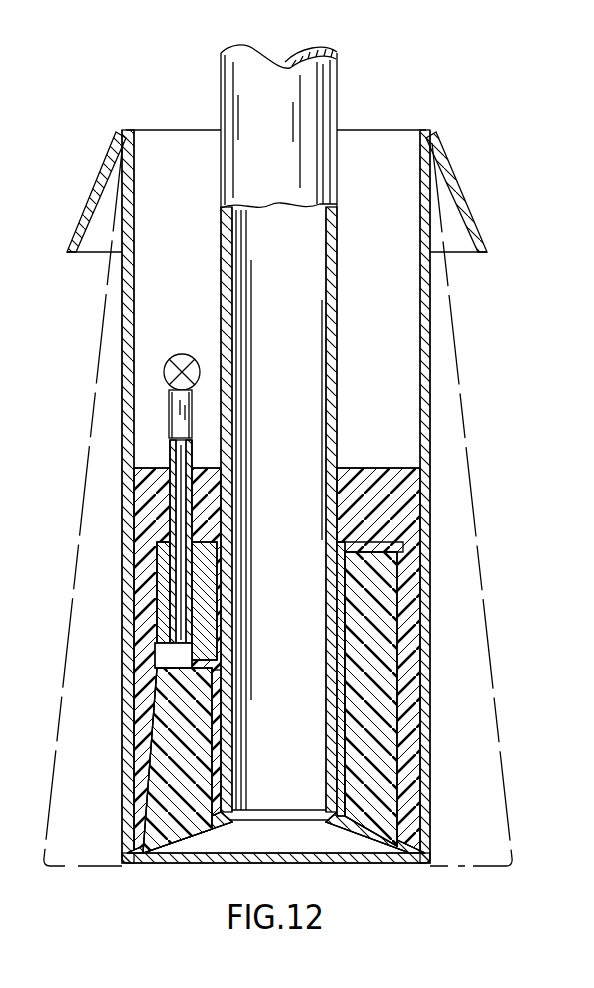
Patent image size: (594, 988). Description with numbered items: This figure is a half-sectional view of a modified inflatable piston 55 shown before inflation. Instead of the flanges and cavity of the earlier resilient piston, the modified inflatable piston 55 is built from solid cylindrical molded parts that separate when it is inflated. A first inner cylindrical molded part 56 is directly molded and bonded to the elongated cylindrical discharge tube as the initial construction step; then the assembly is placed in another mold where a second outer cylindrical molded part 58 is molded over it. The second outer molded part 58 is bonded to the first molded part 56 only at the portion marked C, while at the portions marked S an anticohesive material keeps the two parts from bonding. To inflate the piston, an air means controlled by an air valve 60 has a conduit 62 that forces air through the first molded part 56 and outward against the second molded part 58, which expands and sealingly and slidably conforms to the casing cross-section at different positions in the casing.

The modified inflatable piston 55 is at (397, 466).
The first cylindrical molded part 56 is at (386, 644).
The second outer cylindrical molded part 58 is at (392, 510).
The air valve 60 is at (183, 348).
The conduit 62 is at (188, 578).